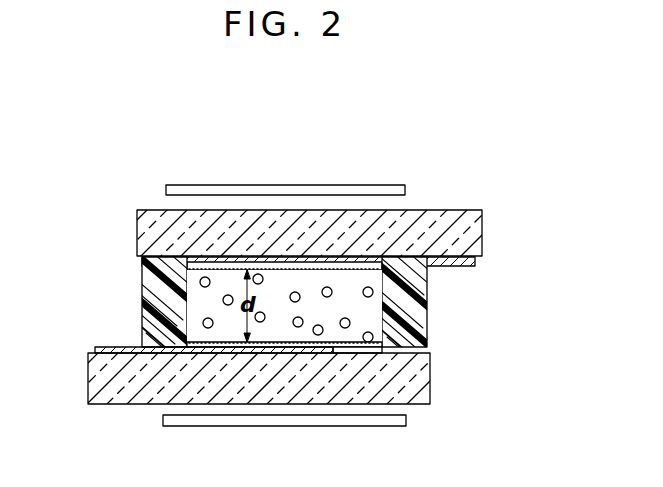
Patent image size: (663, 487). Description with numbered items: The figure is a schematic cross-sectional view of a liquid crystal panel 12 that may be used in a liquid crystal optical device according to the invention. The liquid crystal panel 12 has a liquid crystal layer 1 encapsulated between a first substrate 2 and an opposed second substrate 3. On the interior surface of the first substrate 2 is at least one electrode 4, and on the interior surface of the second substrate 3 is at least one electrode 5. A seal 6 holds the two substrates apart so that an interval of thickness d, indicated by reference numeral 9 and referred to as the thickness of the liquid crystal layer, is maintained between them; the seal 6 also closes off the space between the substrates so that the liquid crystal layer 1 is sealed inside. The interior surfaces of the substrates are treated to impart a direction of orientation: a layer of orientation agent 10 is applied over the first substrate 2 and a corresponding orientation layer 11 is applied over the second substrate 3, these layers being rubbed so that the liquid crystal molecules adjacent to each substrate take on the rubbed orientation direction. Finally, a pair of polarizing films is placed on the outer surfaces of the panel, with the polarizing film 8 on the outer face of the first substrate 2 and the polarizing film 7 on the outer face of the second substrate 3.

The liquid crystal layer 1 is at (372, 326).
The first substrate 2 is at (457, 223).
The second substrate 3 is at (430, 392).
The electrode 4 is at (475, 266).
The electrode 5 is at (110, 347).
The seal 6 is at (152, 277).
The polarizing film 7 is at (177, 427).
The polarizing film 8 is at (405, 191).
The interval of thickness d 9 is at (244, 302).
The orientation layer 10 is at (214, 262).
The orientation layer 11 is at (232, 347).
The liquid crystal panel 12 is at (372, 168).